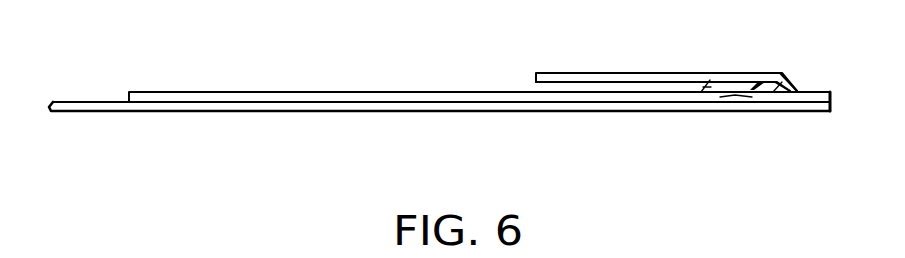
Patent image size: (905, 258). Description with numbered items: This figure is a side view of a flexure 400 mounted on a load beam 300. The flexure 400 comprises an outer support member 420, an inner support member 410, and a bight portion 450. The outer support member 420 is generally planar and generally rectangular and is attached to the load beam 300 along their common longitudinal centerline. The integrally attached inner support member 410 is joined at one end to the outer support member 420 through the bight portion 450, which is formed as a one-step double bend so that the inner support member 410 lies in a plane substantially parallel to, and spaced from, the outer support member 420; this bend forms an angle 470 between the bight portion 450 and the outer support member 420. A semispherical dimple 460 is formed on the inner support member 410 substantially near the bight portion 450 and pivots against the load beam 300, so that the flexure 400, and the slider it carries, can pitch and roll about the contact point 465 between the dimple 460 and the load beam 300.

The load beam 300 is at (90, 112).
The flexure 400 is at (366, 78).
The inner support member 410 is at (563, 72).
The outer support member 420 is at (413, 98).
The bight portion 450 is at (790, 85).
The dimple 460 is at (701, 92).
The contact point 465 is at (740, 111).
The angle 470 is at (775, 92).